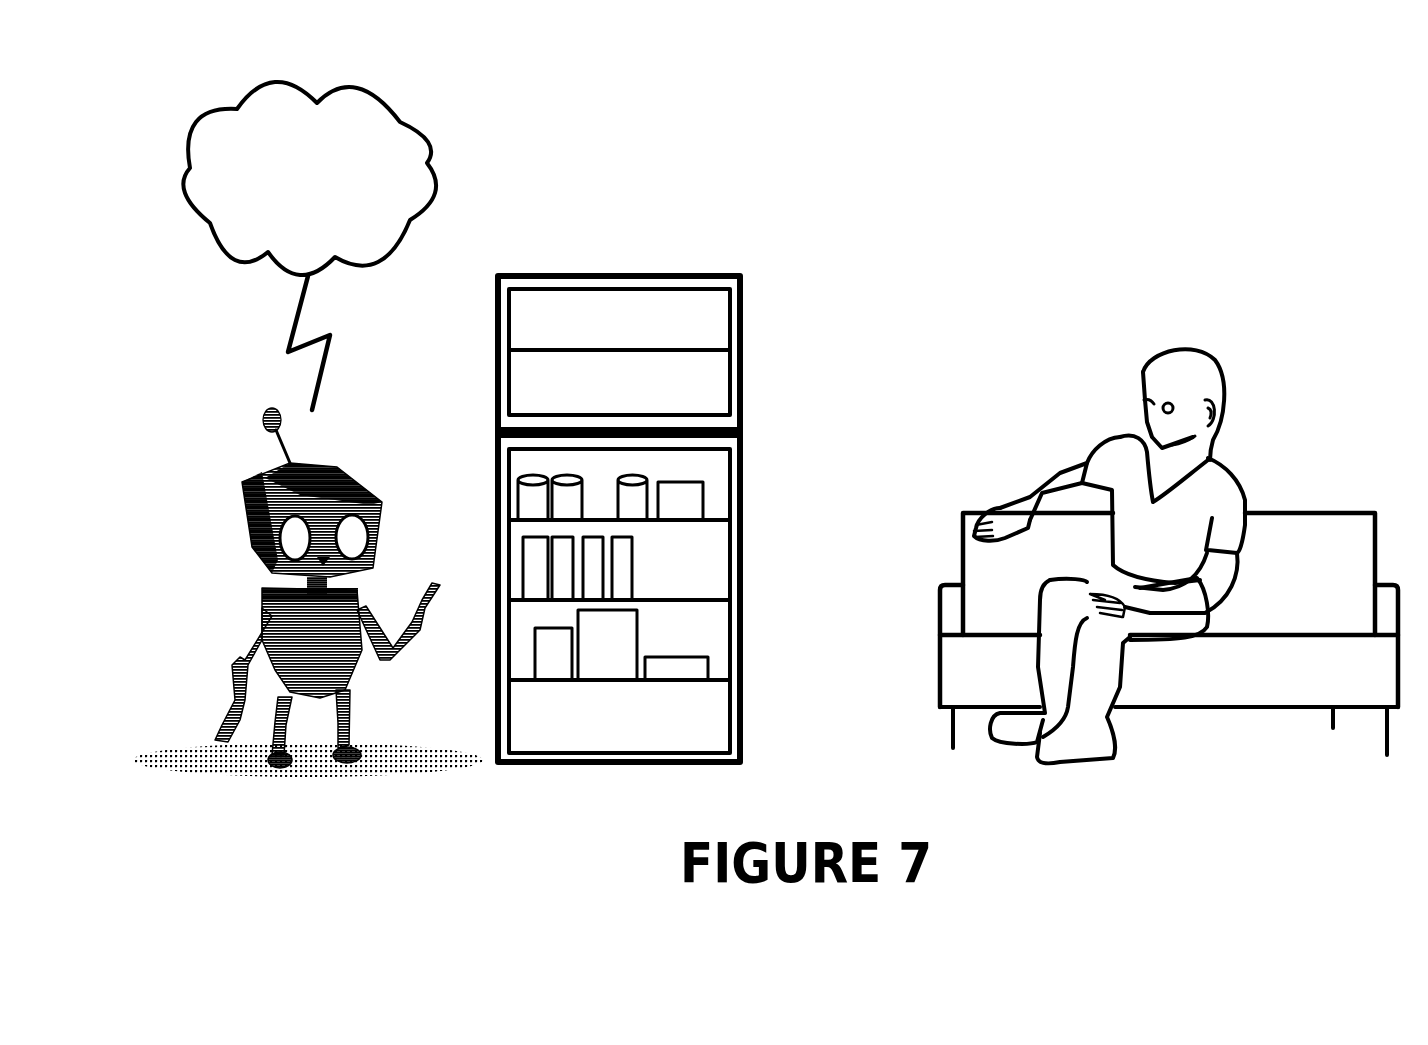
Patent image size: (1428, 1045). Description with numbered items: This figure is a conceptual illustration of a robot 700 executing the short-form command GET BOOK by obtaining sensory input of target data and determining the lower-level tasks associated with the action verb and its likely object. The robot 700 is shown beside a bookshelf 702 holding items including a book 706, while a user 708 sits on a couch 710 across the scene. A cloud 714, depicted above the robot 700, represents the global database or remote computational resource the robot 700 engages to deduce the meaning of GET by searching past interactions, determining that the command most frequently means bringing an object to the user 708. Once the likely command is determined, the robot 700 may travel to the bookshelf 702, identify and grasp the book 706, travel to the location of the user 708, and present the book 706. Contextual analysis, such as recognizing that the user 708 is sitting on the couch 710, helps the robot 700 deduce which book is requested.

The robot 700 is at (231, 441).
The bookshelf 702 is at (632, 494).
The book 706 is at (504, 585).
The user 708 is at (1078, 409).
The couch 710 is at (1279, 500).
The cloud 714 is at (449, 132).